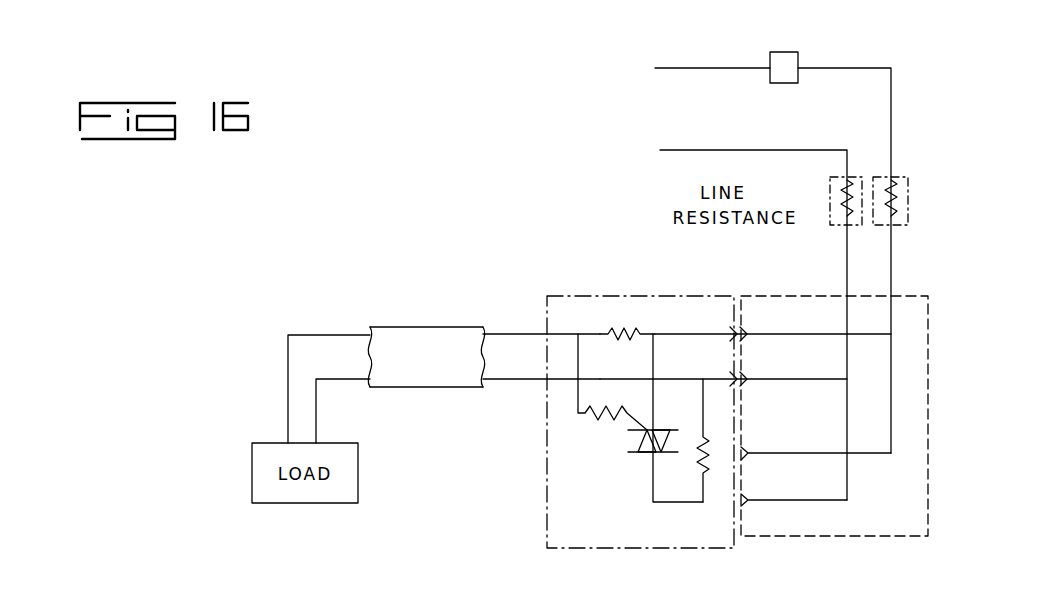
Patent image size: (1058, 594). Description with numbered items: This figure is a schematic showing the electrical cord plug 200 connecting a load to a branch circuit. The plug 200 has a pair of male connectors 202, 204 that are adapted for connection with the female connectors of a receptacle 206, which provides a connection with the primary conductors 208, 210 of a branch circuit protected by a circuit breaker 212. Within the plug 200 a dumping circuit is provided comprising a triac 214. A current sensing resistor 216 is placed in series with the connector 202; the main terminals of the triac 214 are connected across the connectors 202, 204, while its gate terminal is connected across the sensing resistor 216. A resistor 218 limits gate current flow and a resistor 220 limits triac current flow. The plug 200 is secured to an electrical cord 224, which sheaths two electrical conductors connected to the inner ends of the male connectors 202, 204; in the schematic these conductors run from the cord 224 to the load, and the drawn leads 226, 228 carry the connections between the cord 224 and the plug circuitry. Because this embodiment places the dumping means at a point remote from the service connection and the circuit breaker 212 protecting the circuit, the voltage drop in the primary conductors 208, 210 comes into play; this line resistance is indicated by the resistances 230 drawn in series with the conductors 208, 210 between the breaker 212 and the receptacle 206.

The electrical cord plug 200 is at (617, 285).
The male connector 202 is at (735, 332).
The male connector 204 is at (735, 377).
The receptacle 206 is at (814, 290).
The primary conductor 208 is at (715, 68).
The primary conductor 210 is at (722, 150).
The circuit breaker 212 is at (800, 52).
The triac 214 is at (644, 452).
The current sensing resistor 216 is at (617, 330).
The resistor 218 is at (609, 417).
The resistor 220 is at (707, 459).
The electrical cord 224 is at (441, 327).
The conductor 226 is at (536, 334).
The conductor 228 is at (531, 381).
The line resistance 230 is at (850, 193).